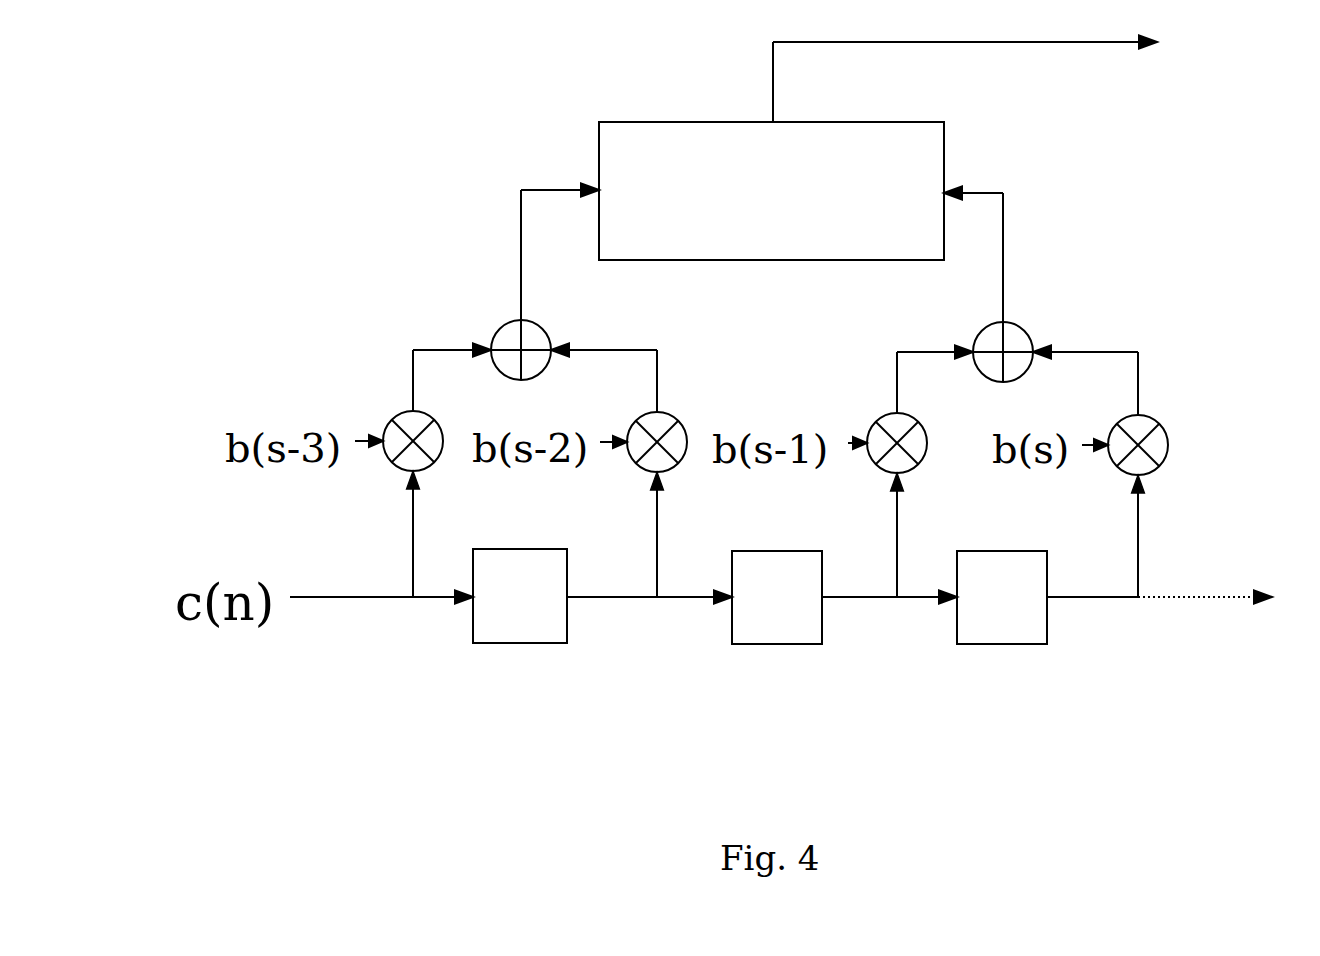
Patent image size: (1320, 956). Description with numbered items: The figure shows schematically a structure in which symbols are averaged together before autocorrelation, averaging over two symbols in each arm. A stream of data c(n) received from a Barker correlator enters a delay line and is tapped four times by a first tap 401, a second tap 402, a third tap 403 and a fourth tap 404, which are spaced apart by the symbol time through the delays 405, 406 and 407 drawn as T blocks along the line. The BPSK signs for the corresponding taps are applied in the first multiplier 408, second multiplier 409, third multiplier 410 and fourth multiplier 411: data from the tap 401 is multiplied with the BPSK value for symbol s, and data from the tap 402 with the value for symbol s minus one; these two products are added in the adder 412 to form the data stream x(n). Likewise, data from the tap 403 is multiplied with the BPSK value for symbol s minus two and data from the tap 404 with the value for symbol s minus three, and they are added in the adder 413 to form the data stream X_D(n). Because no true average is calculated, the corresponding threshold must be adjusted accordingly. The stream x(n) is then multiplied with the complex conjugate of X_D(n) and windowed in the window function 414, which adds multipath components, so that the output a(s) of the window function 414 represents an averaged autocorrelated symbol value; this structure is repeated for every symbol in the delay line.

The first tap 401 is at (1138, 545).
The second tap 402 is at (897, 540).
The third tap 403 is at (657, 540).
The fourth tap 404 is at (413, 538).
The delay 405 is at (1035, 644).
The delay 406 is at (815, 644).
The delay 407 is at (542, 643).
The first multiplier 408 is at (1168, 434).
The second multiplier 409 is at (886, 418).
The third multiplier 410 is at (672, 420).
The fourth multiplier 411 is at (395, 416).
The adder 412 is at (1030, 344).
The adder 413 is at (500, 325).
The window function 414 is at (614, 122).